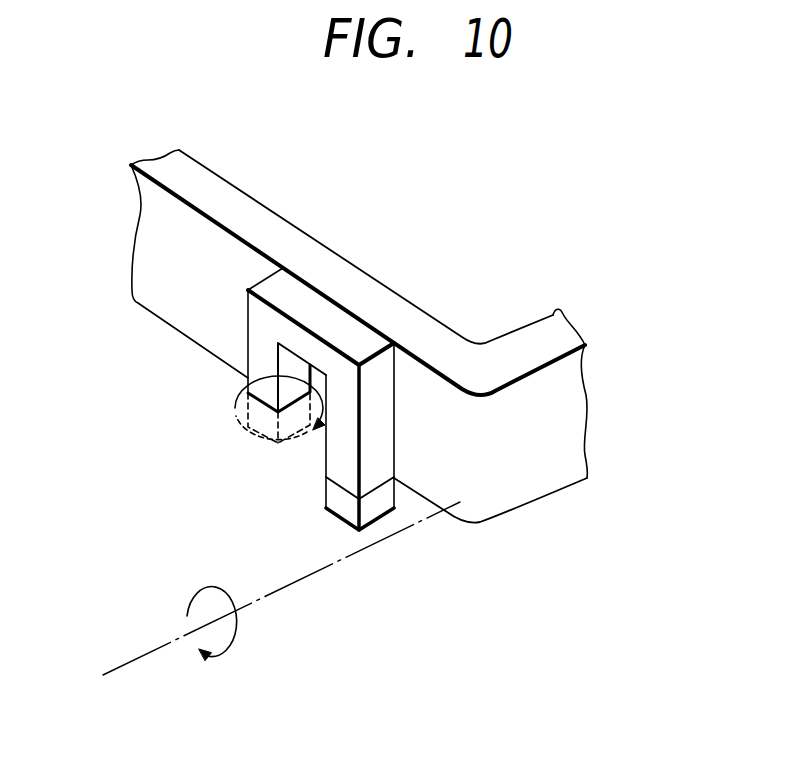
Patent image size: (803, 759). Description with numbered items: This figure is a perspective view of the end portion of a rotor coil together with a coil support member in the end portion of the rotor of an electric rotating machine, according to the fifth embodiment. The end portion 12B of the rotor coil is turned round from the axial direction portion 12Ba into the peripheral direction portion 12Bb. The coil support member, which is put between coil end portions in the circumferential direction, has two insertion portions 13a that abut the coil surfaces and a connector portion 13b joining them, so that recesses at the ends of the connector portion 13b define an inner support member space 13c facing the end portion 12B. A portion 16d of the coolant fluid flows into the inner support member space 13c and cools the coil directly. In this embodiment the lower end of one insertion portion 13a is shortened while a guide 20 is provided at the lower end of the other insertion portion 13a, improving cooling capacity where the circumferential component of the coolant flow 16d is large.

The end portion of the rotor coil 12B is at (227, 181).
The peripheral direction portion 12Bb is at (291, 236).
The axial direction portion 12Ba is at (540, 320).
The insertion portion 13a is at (350, 470).
The connector portion 13b is at (327, 366).
The inner support member space 13c is at (250, 390).
The portion of the coolant fluid 16d is at (280, 438).
The guide 20 is at (328, 512).